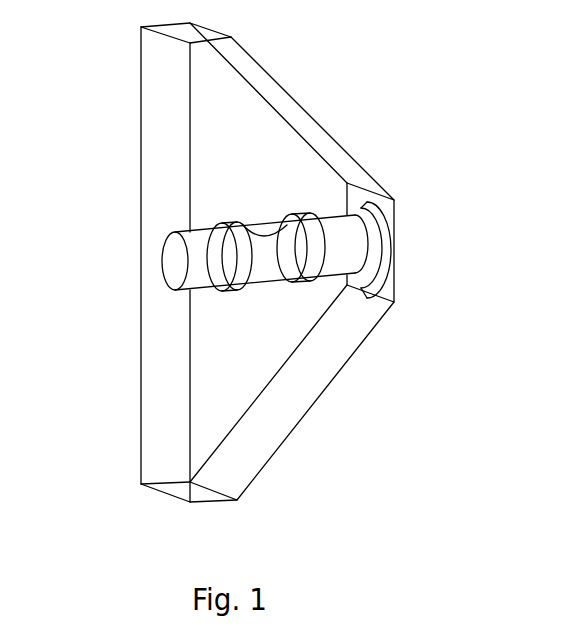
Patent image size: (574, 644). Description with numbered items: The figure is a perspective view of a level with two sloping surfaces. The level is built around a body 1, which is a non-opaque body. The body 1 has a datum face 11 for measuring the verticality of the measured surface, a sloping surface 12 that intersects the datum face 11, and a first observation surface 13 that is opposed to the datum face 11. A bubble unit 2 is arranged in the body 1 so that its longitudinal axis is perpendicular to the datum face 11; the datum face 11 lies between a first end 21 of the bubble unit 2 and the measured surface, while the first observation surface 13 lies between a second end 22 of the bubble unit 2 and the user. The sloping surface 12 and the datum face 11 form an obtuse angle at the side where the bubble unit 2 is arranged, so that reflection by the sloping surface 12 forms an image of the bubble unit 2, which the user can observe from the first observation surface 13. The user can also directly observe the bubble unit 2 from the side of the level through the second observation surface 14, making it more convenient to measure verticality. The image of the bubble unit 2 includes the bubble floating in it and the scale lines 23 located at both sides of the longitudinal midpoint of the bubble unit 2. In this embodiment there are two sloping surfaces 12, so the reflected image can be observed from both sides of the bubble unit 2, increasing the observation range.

The body 1 is at (215, 207).
The datum face 11 is at (395, 200).
The sloping surface 12 is at (293, 110).
The first observation surface 13 is at (168, 130).
The second observation surface 14 is at (228, 370).
The bubble unit 2 is at (263, 258).
The first end 21 is at (350, 253).
The second end 22 is at (177, 262).
The scale lines 23 is at (320, 213).